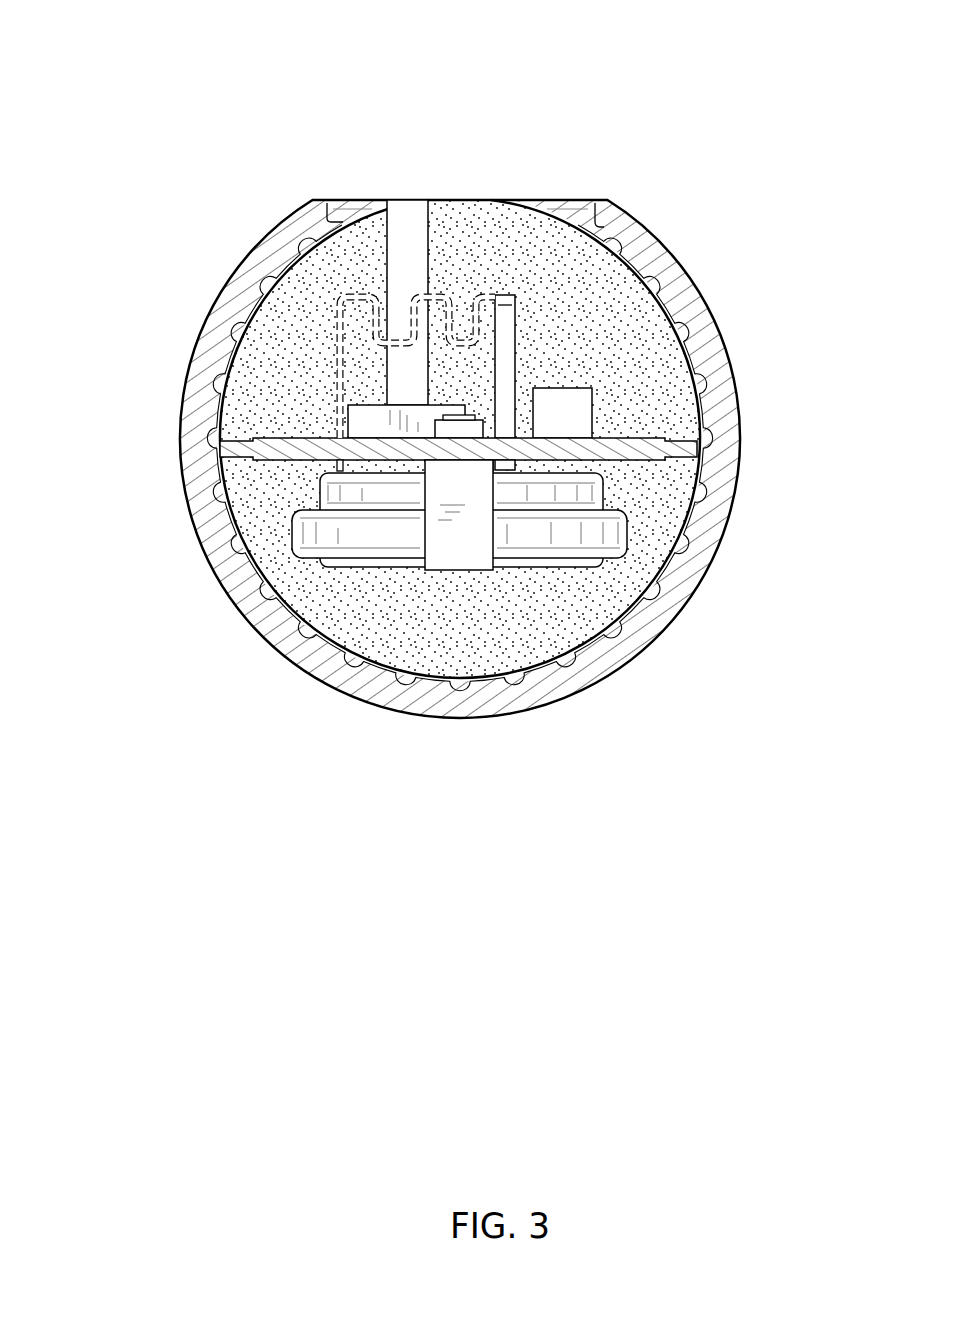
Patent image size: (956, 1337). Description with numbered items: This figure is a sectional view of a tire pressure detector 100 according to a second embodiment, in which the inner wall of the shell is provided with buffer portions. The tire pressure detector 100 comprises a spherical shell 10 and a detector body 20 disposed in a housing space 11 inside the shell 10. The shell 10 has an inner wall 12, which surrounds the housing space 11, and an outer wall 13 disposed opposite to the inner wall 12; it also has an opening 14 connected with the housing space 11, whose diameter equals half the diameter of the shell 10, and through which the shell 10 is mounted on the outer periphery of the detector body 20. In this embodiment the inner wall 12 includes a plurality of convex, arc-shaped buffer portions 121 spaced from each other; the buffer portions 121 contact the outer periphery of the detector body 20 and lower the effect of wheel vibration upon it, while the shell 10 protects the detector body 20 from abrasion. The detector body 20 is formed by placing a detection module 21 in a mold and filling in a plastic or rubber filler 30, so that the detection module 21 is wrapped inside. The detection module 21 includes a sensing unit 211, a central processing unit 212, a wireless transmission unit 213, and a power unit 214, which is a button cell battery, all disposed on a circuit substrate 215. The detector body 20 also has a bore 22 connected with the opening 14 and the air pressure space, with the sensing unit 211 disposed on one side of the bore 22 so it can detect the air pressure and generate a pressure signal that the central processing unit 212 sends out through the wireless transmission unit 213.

The tire pressure detector 100 is at (262, 28).
The shell 10 is at (419, 419).
The housing space 11 is at (650, 234).
The inner wall 12 is at (686, 445).
The outer wall 13 is at (183, 423).
The opening 14 is at (341, 210).
The detector body 20 is at (216, 520).
The detection module 21 is at (454, 407).
The bore 22 is at (389, 249).
The filler 30 is at (468, 690).
The buffer portion 121 is at (650, 592).
The sensing unit 211 is at (360, 412).
The central processing unit 212 is at (577, 393).
The wireless transmission unit 213 is at (506, 295).
The power unit 214 is at (365, 555).
The circuit substrate 215 is at (650, 453).